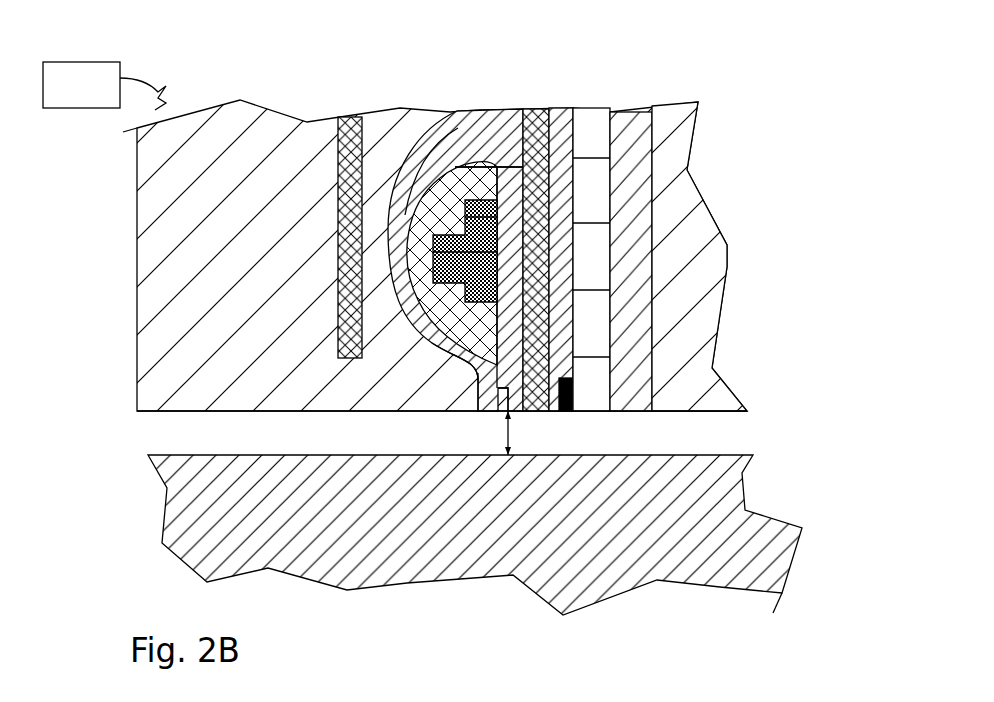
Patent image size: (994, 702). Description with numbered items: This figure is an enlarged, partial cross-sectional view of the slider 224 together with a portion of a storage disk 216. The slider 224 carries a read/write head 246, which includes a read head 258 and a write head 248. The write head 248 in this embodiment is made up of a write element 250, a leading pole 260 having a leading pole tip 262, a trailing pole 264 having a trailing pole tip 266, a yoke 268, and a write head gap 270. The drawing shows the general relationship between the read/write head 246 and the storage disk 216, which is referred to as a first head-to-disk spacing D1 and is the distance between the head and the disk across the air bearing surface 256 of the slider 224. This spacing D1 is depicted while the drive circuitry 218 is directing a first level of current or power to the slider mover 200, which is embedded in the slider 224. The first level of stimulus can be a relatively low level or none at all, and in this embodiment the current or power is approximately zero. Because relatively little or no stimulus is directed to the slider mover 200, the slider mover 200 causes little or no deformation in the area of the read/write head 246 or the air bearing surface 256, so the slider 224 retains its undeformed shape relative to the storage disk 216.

The slider mover 200 is at (350, 158).
The storage disk 216 is at (753, 510).
The drive circuitry 218 is at (67, 72).
The slider 224 is at (632, 53).
The read/write head 246 is at (468, 363).
The write head 248 is at (400, 272).
The write element 250 is at (497, 237).
The air bearing surface 256 is at (175, 416).
The read head 258 is at (515, 407).
The leading pole 260 is at (517, 411).
The leading pole tip 262 is at (517, 413).
The trailing pole 264 is at (488, 395).
The trailing pole tip 266 is at (527, 405).
The yoke 268 is at (489, 143).
The write head gap 270 is at (572, 380).
The first head-to-disk spacing D1 is at (508, 436).